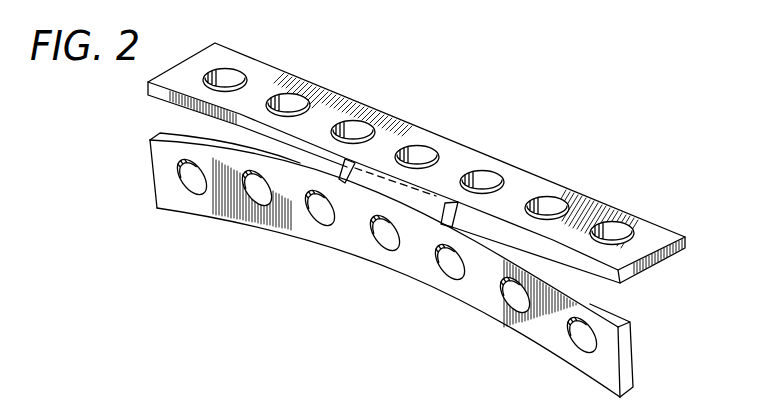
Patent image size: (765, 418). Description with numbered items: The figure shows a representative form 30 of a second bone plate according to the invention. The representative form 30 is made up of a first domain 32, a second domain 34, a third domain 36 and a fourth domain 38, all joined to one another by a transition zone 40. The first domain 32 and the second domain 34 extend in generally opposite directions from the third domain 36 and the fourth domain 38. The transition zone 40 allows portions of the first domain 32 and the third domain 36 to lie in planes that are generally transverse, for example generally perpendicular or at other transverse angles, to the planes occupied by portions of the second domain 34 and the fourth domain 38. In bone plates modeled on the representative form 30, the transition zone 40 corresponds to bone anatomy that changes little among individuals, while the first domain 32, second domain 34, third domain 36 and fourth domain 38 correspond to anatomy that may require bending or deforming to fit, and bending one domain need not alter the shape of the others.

The representative form 30 is at (580, 142).
The first domain 32 is at (322, 100).
The second domain 34 is at (235, 208).
The third domain 36 is at (603, 203).
The fourth domain 38 is at (556, 328).
The transition zone 40 is at (363, 207).